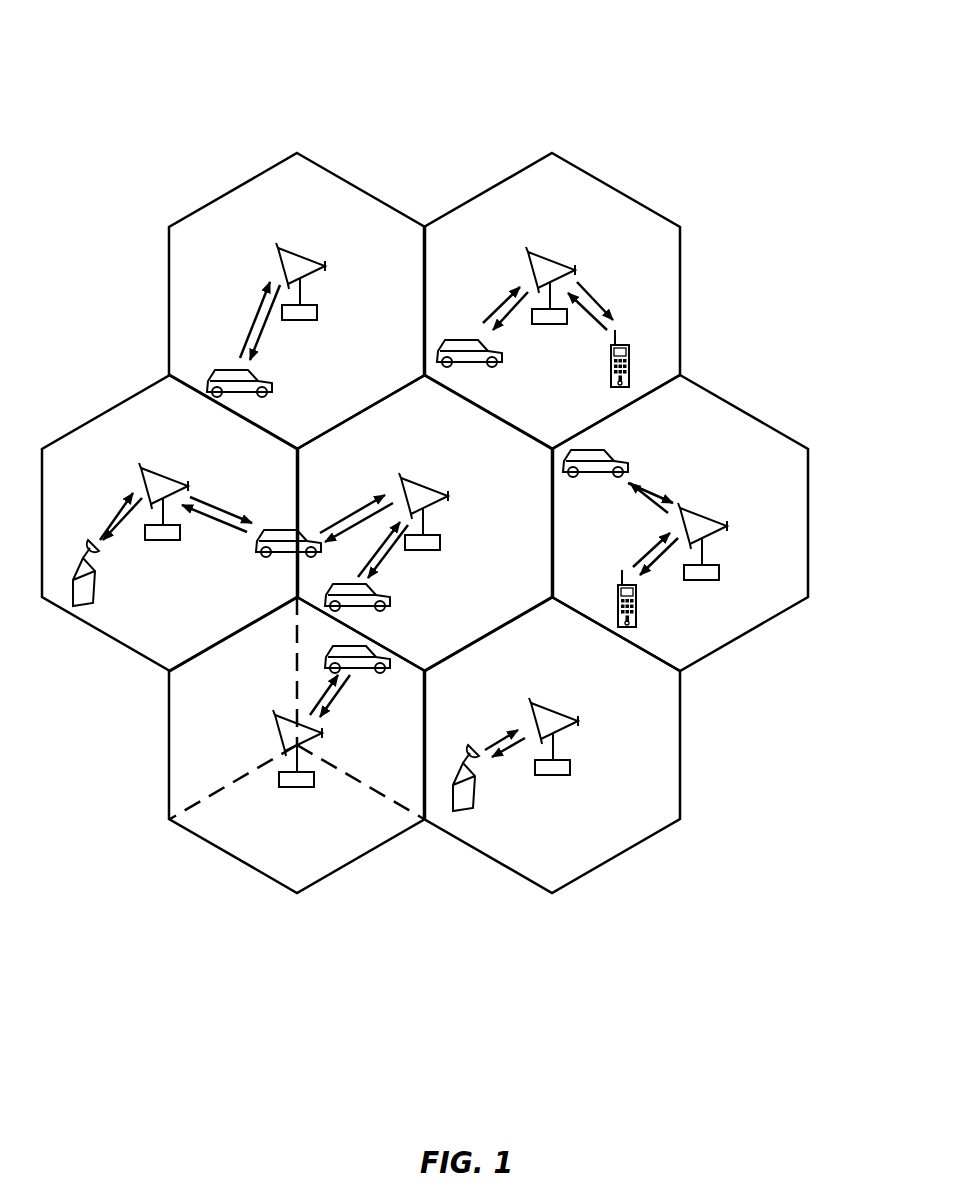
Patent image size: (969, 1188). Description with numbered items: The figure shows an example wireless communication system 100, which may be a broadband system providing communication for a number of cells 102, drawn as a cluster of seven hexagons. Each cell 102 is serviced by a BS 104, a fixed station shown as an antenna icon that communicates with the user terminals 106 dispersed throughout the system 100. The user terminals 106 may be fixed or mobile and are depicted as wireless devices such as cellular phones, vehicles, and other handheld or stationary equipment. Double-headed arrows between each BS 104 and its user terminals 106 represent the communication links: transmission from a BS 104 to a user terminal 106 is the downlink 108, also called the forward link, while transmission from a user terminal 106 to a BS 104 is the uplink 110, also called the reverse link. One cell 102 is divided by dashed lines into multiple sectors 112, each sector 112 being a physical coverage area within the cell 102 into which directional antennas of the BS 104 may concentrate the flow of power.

The wireless communication system 100 is at (723, 67).
The cell 102 is at (230, 190).
The BS 104 is at (282, 253).
The user terminal 106 is at (266, 394).
The downlink 108 is at (262, 333).
The uplink 110 is at (257, 316).
The sector 112 is at (323, 862).